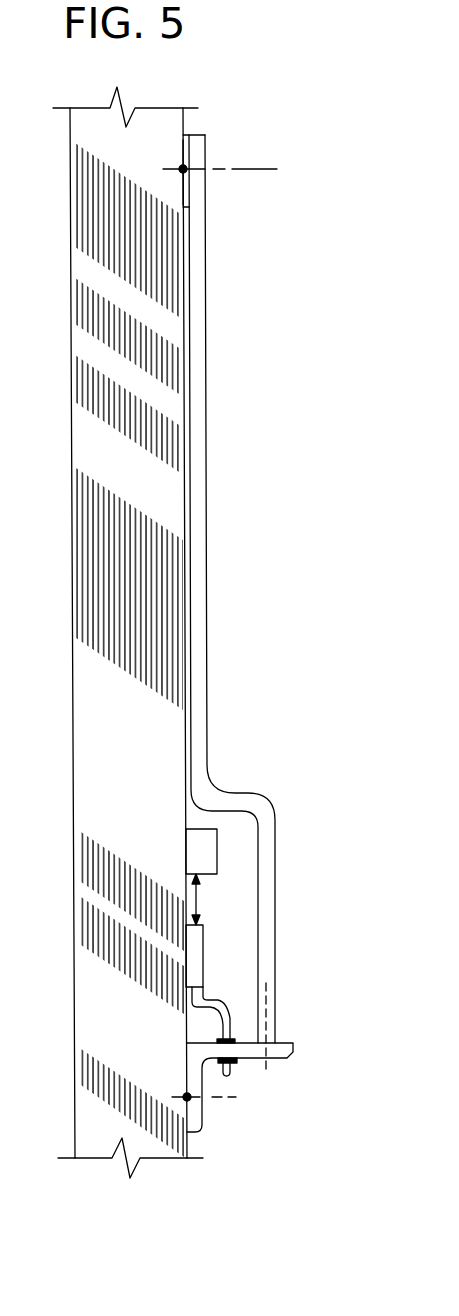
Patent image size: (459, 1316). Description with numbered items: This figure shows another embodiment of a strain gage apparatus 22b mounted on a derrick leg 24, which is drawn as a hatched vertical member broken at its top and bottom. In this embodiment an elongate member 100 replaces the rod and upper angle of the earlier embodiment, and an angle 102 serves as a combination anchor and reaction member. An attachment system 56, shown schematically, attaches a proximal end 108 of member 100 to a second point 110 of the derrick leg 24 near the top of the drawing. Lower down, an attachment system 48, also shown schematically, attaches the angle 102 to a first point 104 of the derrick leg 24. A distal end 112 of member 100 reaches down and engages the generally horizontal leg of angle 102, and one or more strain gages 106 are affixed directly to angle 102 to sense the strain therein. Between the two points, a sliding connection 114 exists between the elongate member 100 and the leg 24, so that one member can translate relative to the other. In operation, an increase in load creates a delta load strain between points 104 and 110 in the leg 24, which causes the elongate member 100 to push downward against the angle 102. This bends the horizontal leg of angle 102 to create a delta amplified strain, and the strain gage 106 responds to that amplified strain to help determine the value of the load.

The strain gage apparatus 22b is at (226, 122).
The attachment system 56 is at (252, 167).
The second point 110 is at (183, 169).
The proximal end 108 is at (207, 185).
The elongate member 100 is at (207, 523).
The derrick leg 24 is at (186, 643).
The sliding connection 114 is at (194, 813).
The strain gage 106 is at (238, 1038).
The distal end 112 is at (275, 1032).
The first point 104 is at (187, 1097).
The angle 102 is at (278, 1062).
The attachment system 48 is at (213, 1098).